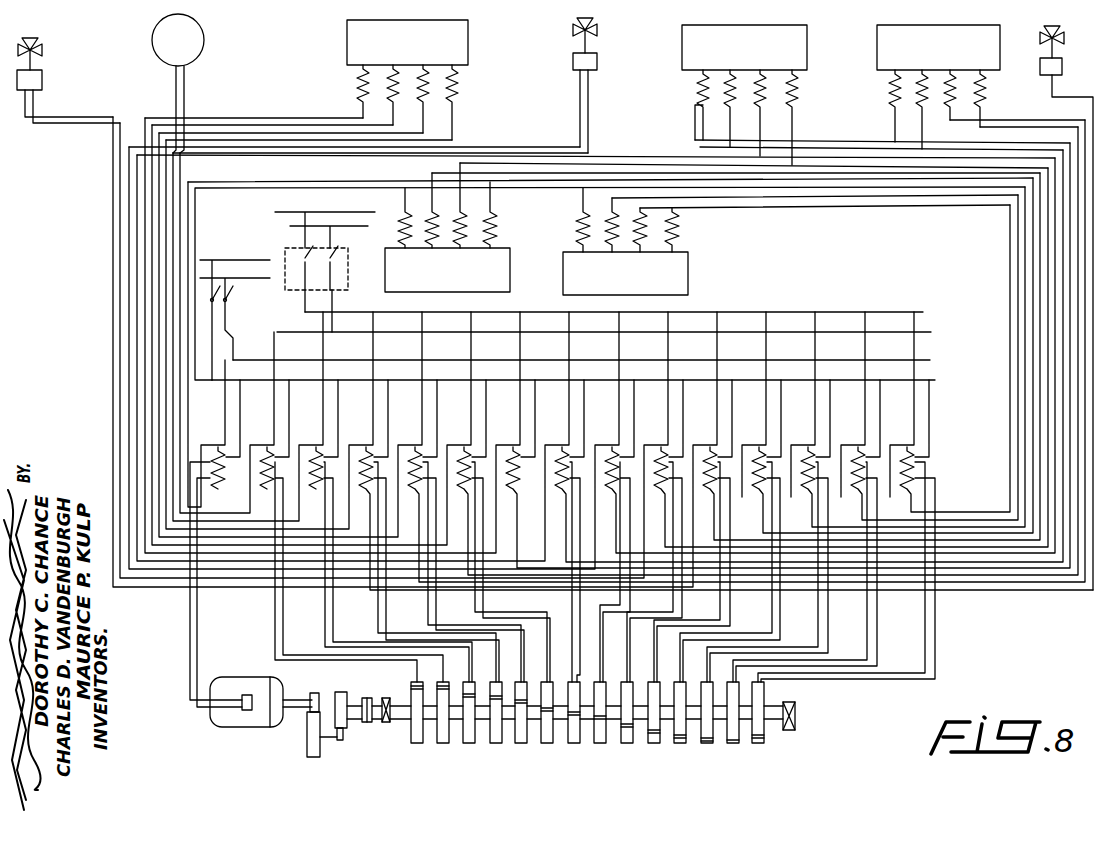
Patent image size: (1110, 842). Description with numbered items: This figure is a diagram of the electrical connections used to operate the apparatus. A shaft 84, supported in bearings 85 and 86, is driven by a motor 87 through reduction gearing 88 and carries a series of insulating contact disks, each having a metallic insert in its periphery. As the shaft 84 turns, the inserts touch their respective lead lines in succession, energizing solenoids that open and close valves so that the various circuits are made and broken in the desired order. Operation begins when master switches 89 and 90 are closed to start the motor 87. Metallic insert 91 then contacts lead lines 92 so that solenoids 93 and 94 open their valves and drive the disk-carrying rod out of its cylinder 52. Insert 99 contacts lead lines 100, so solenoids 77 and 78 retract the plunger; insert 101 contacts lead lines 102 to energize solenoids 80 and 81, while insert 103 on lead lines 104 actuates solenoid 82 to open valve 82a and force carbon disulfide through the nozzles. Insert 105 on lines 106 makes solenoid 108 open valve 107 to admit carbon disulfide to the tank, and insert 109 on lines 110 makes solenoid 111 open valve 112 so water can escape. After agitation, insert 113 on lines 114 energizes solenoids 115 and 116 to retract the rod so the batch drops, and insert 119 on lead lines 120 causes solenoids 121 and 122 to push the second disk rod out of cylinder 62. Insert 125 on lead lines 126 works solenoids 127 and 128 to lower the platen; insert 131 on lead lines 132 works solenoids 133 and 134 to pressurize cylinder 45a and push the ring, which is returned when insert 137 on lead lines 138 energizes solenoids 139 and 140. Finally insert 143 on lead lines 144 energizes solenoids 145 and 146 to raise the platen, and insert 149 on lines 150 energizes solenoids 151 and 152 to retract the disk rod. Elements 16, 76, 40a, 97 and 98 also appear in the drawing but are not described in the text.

The motor 16 is at (204, 45).
The valve 107 is at (44, 48).
The solenoid 108 is at (42, 82).
The relay unit 76 is at (410, 46).
The solenoid 77 is at (360, 90).
The solenoid 78 is at (461, 96).
The solenoid 80 is at (366, 66).
The solenoid 81 is at (430, 70).
The valve 82a is at (601, 32).
The solenoid 82 is at (595, 62).
The relay unit 40a is at (766, 50).
The solenoid 145 is at (706, 68).
The solenoid 146 is at (766, 72).
The solenoid 127 is at (702, 88).
The solenoid 128 is at (796, 98).
The cylinder 62 is at (958, 48).
The solenoid 151 is at (901, 74).
The solenoid 152 is at (956, 74).
The solenoid 122 is at (900, 92).
The solenoid 121 is at (986, 98).
The solenoid 111 is at (1066, 38).
The valve 112 is at (1064, 66).
The master switch 89 is at (224, 258).
The master switch 90 is at (314, 214).
The cylinder 52 is at (458, 280).
The solenoid 93 is at (402, 236).
The solenoid 94 is at (500, 230).
The solenoid 115 is at (434, 200).
The solenoid 116 is at (465, 212).
The cylinder 45a is at (642, 289).
The solenoid 134 is at (578, 236).
The solenoid 133 is at (680, 232).
The solenoid 139 is at (602, 252).
The solenoid 140 is at (656, 252).
The lead lines 92 is at (278, 620).
The conductor 98 is at (326, 610).
The lead lines 100 is at (380, 602).
The lead lines 102 is at (438, 604).
The lead lines 104 is at (480, 596).
The lines 106 is at (532, 608).
The lines 110 is at (572, 640).
The lines 114 is at (620, 615).
The lead lines 120 is at (680, 606).
The lead lines 126 is at (696, 626).
The lead lines 132 is at (744, 636).
The lead lines 138 is at (794, 644).
The lead lines 144 is at (846, 652).
The lines 150 is at (912, 694).
The motor 87 is at (254, 728).
The reduction gearing 88 is at (308, 750).
The shaft 84 is at (351, 728).
The bearing 85 is at (388, 724).
The bearing 86 is at (794, 730).
The metallic insert 91 is at (422, 744).
The cam switch 97 is at (446, 743).
The metallic insert 99 is at (472, 744).
The metallic insert 101 is at (498, 742).
The metallic insert 103 is at (521, 744).
The metallic insert 105 is at (547, 744).
The metallic insert 109 is at (574, 744).
The metallic insert 113 is at (600, 744).
The metallic insert 119 is at (627, 744).
The metallic insert 125 is at (654, 744).
The metallic insert 131 is at (680, 744).
The metallic insert 137 is at (707, 744).
The metallic insert 143 is at (733, 744).
The metallic insert 149 is at (758, 744).